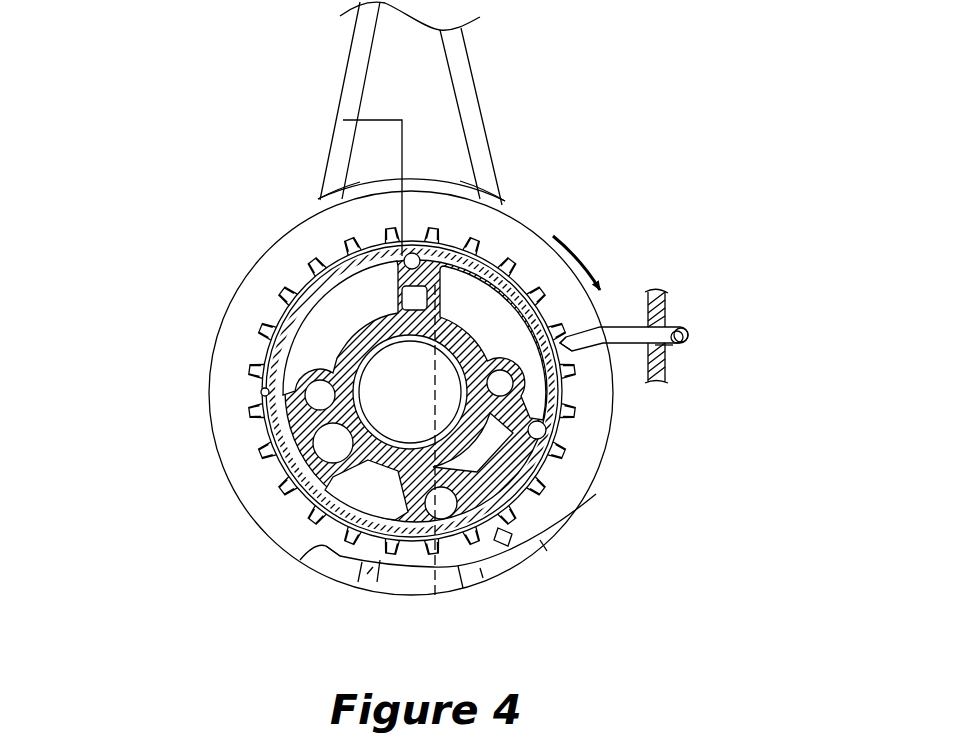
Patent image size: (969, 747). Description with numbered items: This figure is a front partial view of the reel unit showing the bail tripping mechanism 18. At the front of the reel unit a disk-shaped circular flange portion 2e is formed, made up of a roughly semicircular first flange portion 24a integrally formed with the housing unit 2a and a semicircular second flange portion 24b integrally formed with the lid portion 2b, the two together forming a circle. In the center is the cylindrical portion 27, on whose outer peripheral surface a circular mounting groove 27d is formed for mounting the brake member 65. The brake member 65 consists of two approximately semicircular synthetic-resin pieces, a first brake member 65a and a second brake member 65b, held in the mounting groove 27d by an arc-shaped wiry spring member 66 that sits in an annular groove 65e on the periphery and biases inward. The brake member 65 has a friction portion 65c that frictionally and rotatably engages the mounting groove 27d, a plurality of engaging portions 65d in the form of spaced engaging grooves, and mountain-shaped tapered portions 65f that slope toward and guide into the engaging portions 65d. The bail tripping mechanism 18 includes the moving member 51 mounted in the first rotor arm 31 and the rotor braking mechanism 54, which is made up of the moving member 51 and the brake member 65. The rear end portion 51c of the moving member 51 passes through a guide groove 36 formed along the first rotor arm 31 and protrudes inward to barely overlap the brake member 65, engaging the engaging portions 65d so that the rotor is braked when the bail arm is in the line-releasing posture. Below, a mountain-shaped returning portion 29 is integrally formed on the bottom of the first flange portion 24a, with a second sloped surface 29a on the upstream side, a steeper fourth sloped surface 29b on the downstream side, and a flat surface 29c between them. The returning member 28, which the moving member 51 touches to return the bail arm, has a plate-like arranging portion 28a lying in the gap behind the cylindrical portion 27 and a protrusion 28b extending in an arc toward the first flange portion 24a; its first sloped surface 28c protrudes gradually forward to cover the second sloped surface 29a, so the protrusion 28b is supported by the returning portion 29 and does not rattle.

The circular flange portion 2e is at (321, 62).
The first flange portion 24a is at (350, 187).
The second flange portion 24b is at (447, 184).
The housing unit 2a is at (321, 182).
The lid portion 2b is at (504, 187).
The brake member 65 is at (257, 355).
The first brake member 65a is at (343, 197).
The second brake member 65b is at (517, 290).
The friction portion 65c is at (287, 325).
The engaging portions 65d is at (573, 351).
The annular groove 65e is at (500, 573).
The tapered portions 65f is at (300, 470).
The cylindrical portion 27 is at (288, 438).
The circular mounting groove 27d is at (265, 407).
The moving member 51 is at (686, 322).
The rear end portion 51c is at (615, 323).
The bail tripping mechanism 18 is at (700, 340).
The guide groove 36 is at (657, 346).
The first rotor arm 31 is at (667, 380).
The rotor braking mechanism 54 is at (598, 423).
The spring member 66 is at (558, 487).
The returning member 28 is at (541, 554).
The arranging portion 28a is at (527, 503).
The protrusion 28b is at (465, 583).
The first sloped surface 28c is at (482, 572).
The returning portion 29 is at (338, 586).
The second sloped surface 29a is at (390, 580).
The fourth sloped surface 29b is at (320, 550).
The flat surface 29c is at (343, 577).